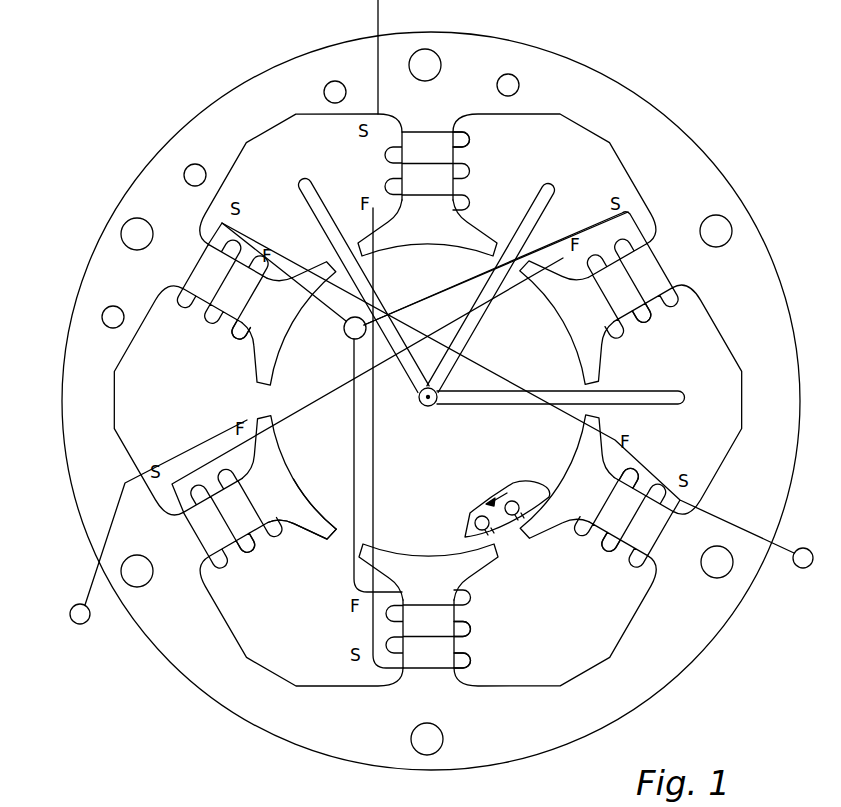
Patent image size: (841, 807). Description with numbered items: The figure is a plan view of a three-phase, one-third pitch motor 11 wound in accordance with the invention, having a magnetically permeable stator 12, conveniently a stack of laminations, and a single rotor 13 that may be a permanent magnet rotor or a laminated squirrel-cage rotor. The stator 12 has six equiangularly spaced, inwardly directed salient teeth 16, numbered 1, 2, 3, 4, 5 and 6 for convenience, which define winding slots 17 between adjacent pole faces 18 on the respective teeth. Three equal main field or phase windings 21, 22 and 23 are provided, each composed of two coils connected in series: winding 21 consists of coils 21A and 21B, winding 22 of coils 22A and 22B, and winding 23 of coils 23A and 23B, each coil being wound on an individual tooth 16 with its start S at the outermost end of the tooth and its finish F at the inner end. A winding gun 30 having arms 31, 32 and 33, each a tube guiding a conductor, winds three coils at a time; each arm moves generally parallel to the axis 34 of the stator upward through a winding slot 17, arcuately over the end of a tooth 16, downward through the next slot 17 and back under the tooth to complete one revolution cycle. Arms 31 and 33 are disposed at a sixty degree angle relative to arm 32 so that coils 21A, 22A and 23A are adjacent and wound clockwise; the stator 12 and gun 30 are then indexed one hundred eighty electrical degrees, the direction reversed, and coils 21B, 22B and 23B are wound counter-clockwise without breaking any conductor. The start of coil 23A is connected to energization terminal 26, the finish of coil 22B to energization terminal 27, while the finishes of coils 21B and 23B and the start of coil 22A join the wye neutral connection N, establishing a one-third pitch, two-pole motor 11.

The three-phase motor 11 is at (632, 80).
The stator 12 is at (698, 150).
The rotor 13 is at (505, 531).
The salient teeth 16 is at (598, 532).
The winding slots 17 is at (342, 540).
The pole faces 18 is at (332, 500).
The main field winding 21 is at (427, 126).
The coil 21A is at (471, 145).
The coil 21B is at (476, 628).
The main field winding 22 is at (664, 266).
The coil 22A is at (648, 310).
The coil 22B is at (268, 548).
The main field winding 23 is at (198, 264).
The coil 23A is at (636, 466).
The coil 23B is at (203, 306).
The energization terminal 26 is at (805, 548).
The energization terminal 27 is at (90, 623).
The winding gun 30 is at (432, 406).
The arm 31 is at (322, 206).
The arm 32 is at (530, 208).
The arm 33 is at (633, 390).
The axis 34 is at (421, 405).
The tooth 1 is at (427, 228).
The tooth 2 is at (577, 313).
The tooth 3 is at (577, 485).
The tooth 4 is at (428, 572).
The tooth 5 is at (279, 486).
The tooth 6 is at (279, 314).